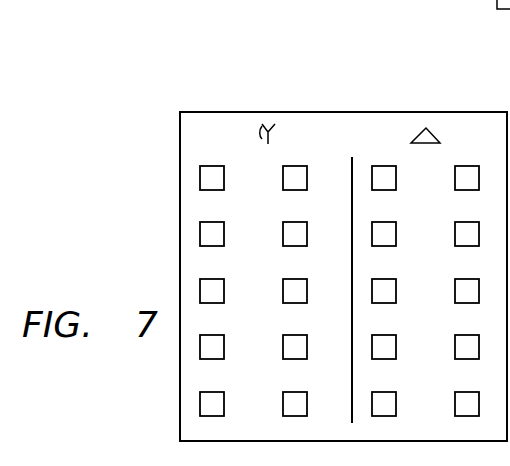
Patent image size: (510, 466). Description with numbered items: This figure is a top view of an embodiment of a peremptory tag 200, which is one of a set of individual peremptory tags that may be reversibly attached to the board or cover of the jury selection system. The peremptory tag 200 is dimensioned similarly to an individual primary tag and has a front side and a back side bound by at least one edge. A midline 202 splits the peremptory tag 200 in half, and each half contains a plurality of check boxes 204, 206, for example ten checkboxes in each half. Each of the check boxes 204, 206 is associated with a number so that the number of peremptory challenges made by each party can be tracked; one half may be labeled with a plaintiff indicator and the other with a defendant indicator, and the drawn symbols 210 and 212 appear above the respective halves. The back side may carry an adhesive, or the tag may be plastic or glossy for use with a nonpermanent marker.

The peremptory tag 200 is at (345, 112).
The midline 202 is at (352, 180).
The check boxes 204 is at (211, 146).
The check boxes 206 is at (465, 147).
The antibody symbol 210 is at (267, 120).
The triangle indicator symbol 212 is at (426, 127).